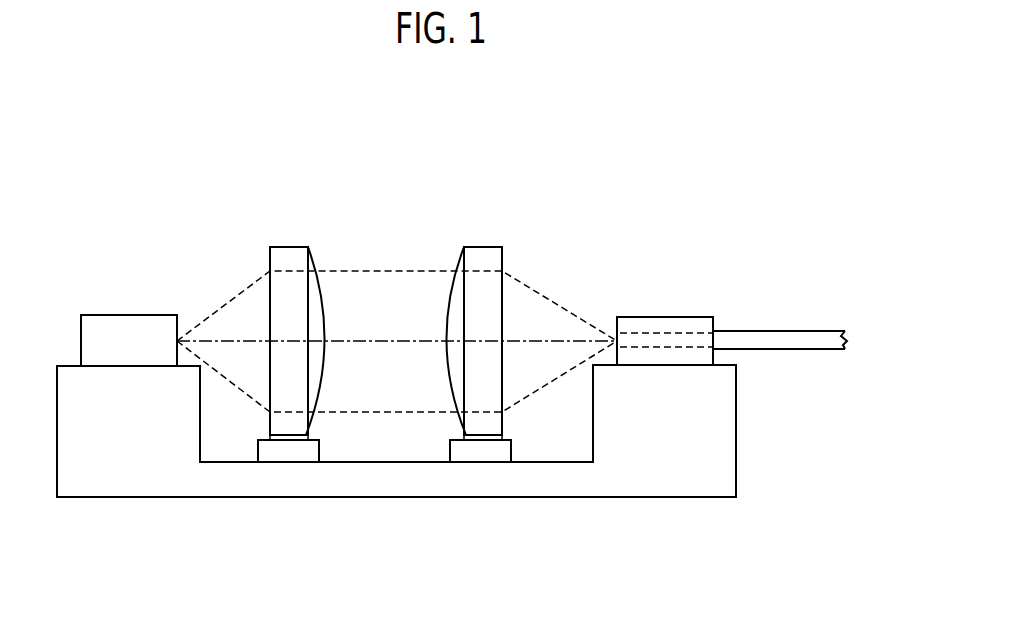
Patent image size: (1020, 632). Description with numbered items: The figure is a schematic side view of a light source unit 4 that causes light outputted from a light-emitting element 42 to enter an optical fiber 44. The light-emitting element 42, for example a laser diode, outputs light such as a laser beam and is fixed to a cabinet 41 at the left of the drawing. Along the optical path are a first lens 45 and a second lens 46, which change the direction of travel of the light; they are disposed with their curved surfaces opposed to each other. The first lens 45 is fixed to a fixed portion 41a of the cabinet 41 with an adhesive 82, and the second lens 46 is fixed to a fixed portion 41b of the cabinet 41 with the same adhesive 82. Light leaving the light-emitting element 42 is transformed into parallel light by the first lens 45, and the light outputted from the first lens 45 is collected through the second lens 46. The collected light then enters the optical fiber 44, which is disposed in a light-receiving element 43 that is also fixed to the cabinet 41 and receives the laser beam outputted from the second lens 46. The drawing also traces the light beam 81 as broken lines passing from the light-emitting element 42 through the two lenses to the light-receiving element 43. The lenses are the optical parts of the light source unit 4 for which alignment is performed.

The light source unit 4 is at (675, 192).
The cabinet 41 is at (688, 487).
The fixed portion 41a is at (285, 451).
The fixed portion 41b is at (477, 451).
The light-emitting element 42 is at (102, 320).
The light-receiving element 43 is at (672, 322).
The optical fiber 44 is at (790, 340).
The first lens 45 is at (280, 250).
The second lens 46 is at (478, 250).
The light beam 81 is at (573, 340).
The adhesive 82 is at (295, 438).